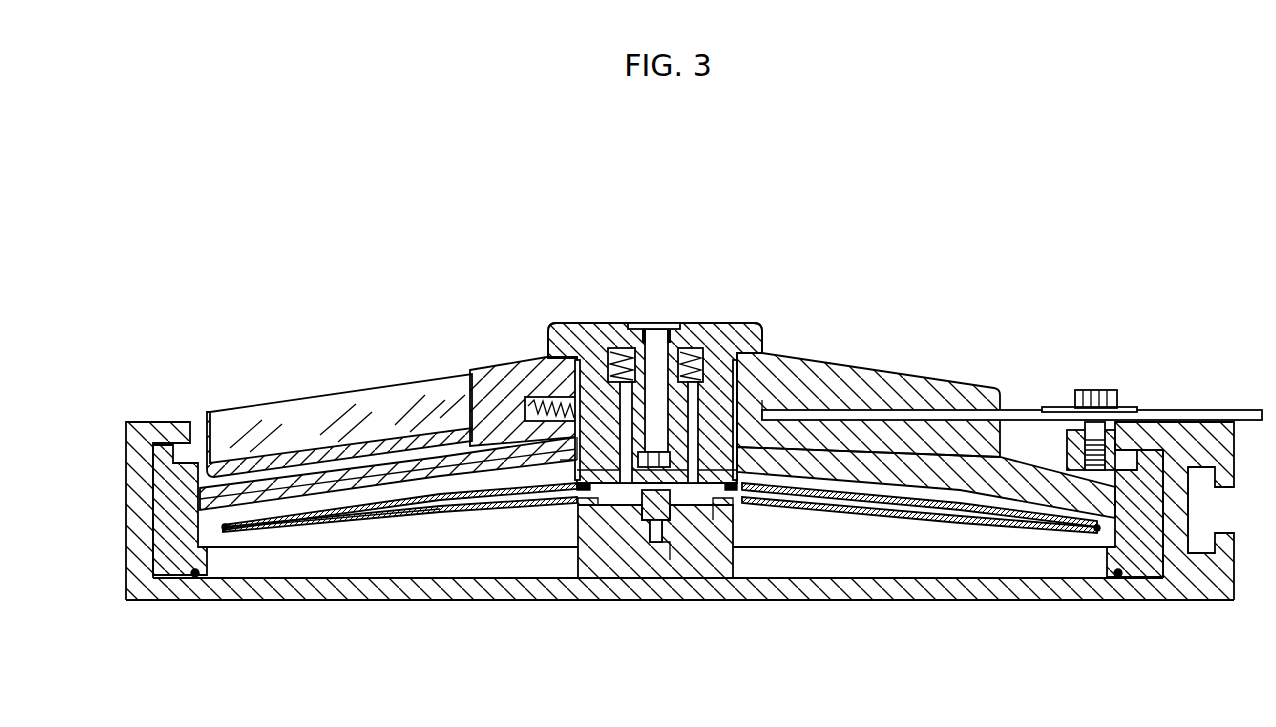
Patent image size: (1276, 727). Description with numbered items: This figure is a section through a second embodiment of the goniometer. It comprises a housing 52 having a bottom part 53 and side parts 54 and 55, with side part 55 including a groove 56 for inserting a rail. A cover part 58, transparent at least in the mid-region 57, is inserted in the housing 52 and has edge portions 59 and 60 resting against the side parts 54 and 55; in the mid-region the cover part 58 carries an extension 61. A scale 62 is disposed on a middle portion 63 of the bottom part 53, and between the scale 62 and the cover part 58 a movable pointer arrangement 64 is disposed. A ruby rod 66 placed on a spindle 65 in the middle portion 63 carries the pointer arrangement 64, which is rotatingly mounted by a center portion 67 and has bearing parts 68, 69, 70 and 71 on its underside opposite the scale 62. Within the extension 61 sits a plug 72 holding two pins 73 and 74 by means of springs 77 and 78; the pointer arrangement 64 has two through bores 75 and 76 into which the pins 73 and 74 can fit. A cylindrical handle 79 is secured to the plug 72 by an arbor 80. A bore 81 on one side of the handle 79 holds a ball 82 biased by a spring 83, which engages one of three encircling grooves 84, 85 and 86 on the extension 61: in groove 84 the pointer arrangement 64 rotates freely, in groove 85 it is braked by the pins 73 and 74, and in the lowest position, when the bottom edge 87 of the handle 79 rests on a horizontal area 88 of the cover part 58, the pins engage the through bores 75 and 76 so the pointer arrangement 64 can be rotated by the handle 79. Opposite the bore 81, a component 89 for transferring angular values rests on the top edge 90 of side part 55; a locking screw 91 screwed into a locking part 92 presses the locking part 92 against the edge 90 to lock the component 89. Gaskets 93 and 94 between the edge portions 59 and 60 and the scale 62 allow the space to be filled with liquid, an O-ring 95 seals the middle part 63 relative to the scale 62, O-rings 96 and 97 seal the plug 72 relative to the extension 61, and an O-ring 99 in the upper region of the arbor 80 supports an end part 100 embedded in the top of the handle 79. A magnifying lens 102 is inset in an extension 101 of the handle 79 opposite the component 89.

The housing 52 is at (178, 428).
The bottom part 53 is at (398, 592).
The side part 54 is at (131, 428).
The side part 55 is at (1228, 455).
The groove 56 is at (1200, 538).
The mid-region 57 is at (442, 466).
The cover part 58 is at (388, 465).
The edge portion 59 is at (173, 558).
The edge portion 60 is at (1140, 483).
The extension 61 is at (738, 385).
The scale 62 is at (281, 536).
The middle portion 63 is at (640, 560).
The pointer arrangement 64 is at (353, 512).
The spindle 65 is at (656, 525).
The ruby rod 66 is at (650, 540).
The center portion 67 is at (675, 560).
The bearing part 68 is at (573, 488).
The bearing part 69 is at (731, 486).
The bearing part 70 is at (800, 498).
The bearing part 71 is at (661, 515).
The plug 72 is at (598, 380).
The pin 73 is at (626, 370).
The pin 74 is at (700, 390).
The through bore 75 is at (597, 512).
The through bore 76 is at (712, 510).
The spring 77 is at (620, 378).
The spring 78 is at (712, 400).
The cylindrical handle 79 is at (755, 360).
The arbor 80 is at (688, 360).
The bore 81 is at (508, 402).
The ball 82 is at (535, 438).
The spring 83 is at (477, 370).
The groove 84 is at (540, 345).
The groove 85 is at (540, 400).
The groove 86 is at (560, 466).
The bottom edge 87 is at (822, 443).
The horizontal area 88 is at (873, 460).
The component for transferring angular values 89 is at (1017, 413).
The top edge 90 is at (1178, 470).
The locking screw 91 is at (1092, 400).
The locking part 92 is at (1068, 432).
The gasket 93 is at (196, 577).
The gasket 94 is at (1118, 578).
The O-ring 95 is at (722, 504).
The O-ring 96 is at (760, 400).
The O-ring 97 is at (790, 405).
The O-ring 99 is at (658, 352).
The end part 100 is at (655, 326).
The extension 101 is at (270, 457).
The magnifying lens 102 is at (317, 407).